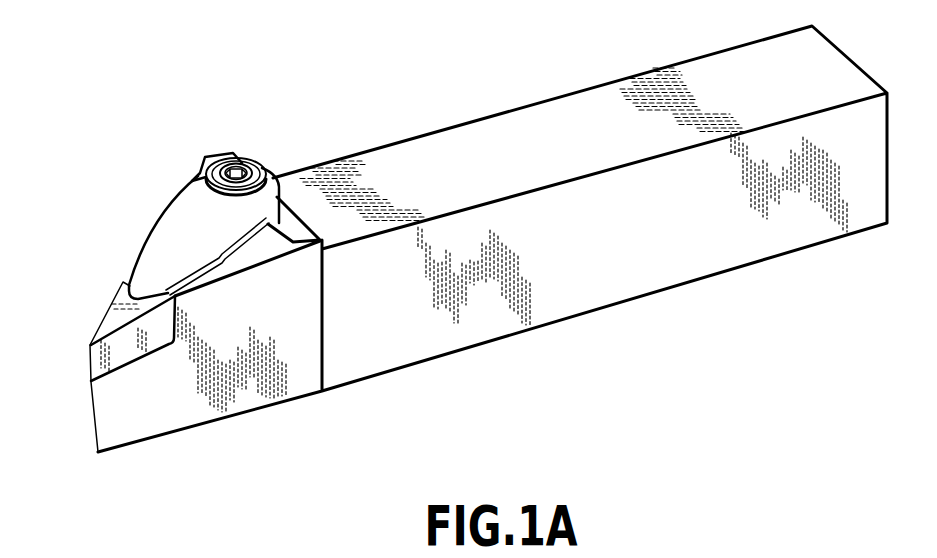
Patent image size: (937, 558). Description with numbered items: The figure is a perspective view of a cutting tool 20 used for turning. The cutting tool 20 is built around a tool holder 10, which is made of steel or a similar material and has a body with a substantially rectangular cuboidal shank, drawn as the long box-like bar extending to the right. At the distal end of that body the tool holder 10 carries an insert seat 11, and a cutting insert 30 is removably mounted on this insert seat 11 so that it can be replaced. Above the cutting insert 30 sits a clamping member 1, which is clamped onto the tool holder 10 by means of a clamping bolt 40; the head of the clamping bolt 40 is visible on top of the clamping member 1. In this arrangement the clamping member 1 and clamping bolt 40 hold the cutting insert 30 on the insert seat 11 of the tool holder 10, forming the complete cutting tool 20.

The tool holder 10 is at (433, 130).
The cutting tool 20 is at (560, 334).
The insert seat 11 is at (118, 371).
The cutting insert 30 is at (110, 304).
The clamping member 1 is at (195, 228).
The clamping bolt 40 is at (237, 172).